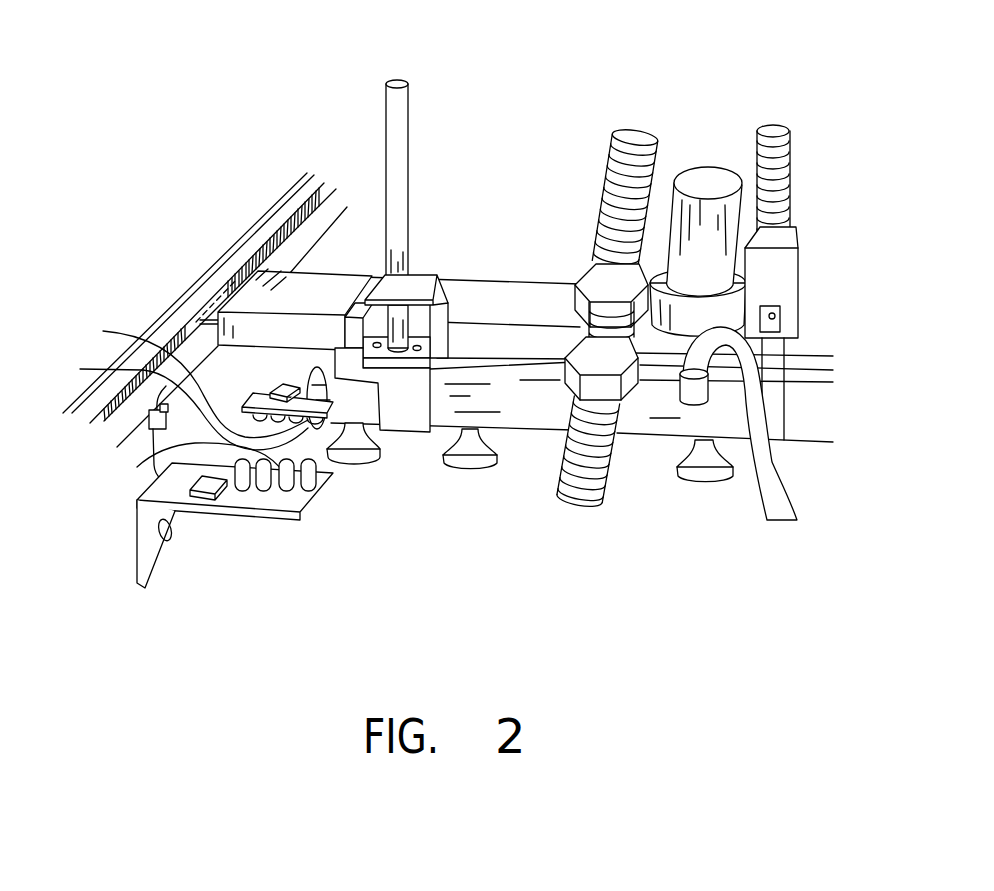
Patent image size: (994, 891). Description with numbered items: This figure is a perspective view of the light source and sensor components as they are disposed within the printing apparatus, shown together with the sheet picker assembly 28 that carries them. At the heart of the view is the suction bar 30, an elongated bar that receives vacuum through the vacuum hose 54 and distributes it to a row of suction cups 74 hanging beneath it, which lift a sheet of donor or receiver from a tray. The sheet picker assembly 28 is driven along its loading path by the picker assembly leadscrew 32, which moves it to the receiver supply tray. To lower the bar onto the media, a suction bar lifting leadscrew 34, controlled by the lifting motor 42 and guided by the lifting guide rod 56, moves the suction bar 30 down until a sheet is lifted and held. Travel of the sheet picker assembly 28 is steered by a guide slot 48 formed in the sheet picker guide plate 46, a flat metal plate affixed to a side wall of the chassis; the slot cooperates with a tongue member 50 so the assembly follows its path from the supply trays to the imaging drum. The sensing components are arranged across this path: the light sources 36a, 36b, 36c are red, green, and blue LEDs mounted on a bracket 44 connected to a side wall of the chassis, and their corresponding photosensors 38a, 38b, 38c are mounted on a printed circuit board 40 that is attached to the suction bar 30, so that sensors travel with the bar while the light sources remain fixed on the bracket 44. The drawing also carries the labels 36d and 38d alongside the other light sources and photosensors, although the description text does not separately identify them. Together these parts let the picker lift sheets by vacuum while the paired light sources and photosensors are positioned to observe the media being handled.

The sheet picker assembly 28 is at (822, 335).
The suction bar 30 is at (460, 372).
The picker assembly leadscrew 32 is at (633, 131).
The suction bar lifting leadscrew 34 is at (787, 130).
The light source 36a is at (243, 492).
The light source 36b is at (263, 492).
The light source 36c is at (285, 492).
The terminal 36d is at (308, 482).
The photosensor 38a is at (180, 378).
The photosensor 38b is at (169, 404).
The photosensor 38c is at (188, 462).
The sensor clamp 38d is at (318, 378).
The printed circuit board 40 is at (252, 393).
The lifting motor 42 is at (716, 168).
The bracket 44 is at (137, 576).
The sheet picker guide plate 46 is at (256, 228).
The guide slot 48 is at (299, 178).
The tongue member 50 is at (228, 289).
The vacuum hose 54 is at (773, 512).
The lifting guide rod 56 is at (402, 78).
The suction cups 74 is at (365, 462).